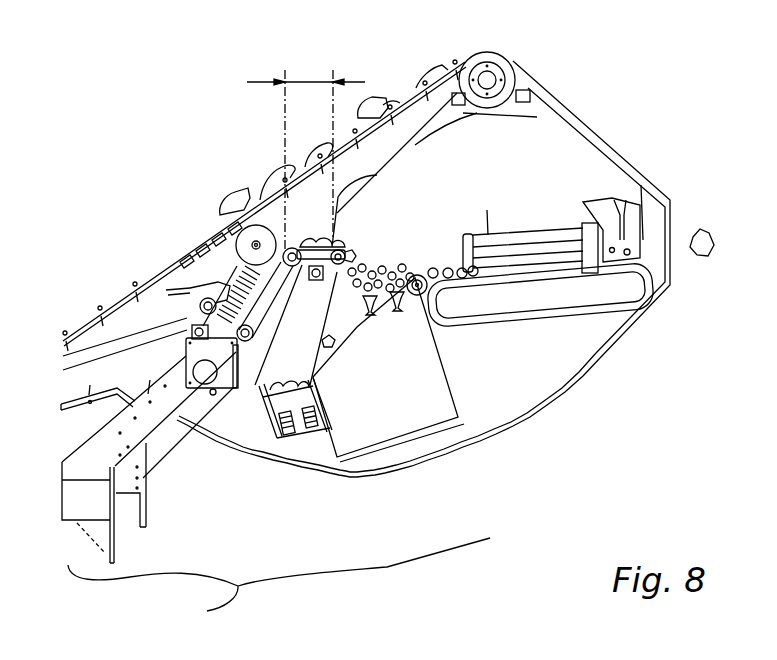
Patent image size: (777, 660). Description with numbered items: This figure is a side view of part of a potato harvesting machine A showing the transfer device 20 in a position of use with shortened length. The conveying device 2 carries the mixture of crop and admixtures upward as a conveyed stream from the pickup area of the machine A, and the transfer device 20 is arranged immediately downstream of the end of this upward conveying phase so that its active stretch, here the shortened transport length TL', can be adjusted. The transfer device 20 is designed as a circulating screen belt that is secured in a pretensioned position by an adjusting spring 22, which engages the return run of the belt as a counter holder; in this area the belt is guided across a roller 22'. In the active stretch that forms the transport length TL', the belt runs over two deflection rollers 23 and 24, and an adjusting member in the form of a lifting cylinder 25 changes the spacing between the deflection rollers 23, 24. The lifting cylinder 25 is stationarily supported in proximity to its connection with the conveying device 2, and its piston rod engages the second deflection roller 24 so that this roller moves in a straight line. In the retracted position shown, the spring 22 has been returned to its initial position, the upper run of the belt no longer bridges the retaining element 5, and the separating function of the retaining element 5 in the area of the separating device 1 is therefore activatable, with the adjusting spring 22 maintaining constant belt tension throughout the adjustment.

The separating device 1 is at (437, 410).
The conveying device 2 is at (232, 263).
The retaining element 5 is at (362, 322).
The transfer device 20 is at (347, 252).
The adjusting spring 22 is at (220, 383).
The roller 22' is at (151, 451).
The deflection roller 23 is at (266, 222).
The deflection roller 24 is at (350, 262).
The lifting cylinder 25 is at (303, 258).
The transport length TL' is at (277, 147).
The potato harvesting machine A is at (279, 590).